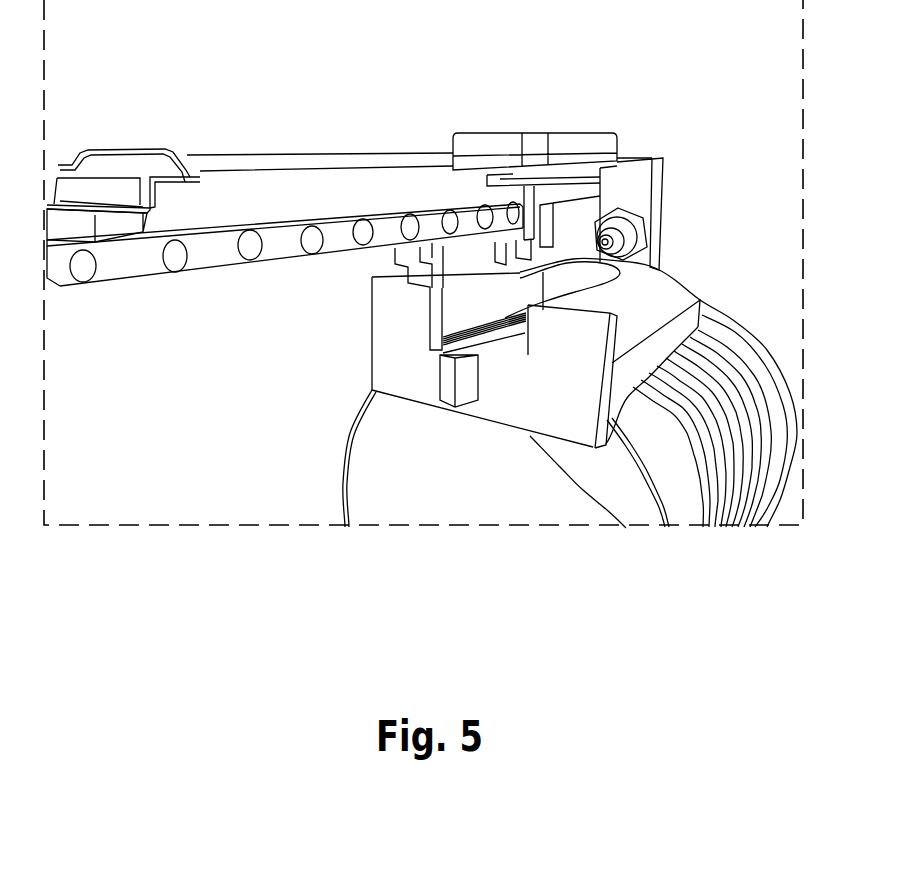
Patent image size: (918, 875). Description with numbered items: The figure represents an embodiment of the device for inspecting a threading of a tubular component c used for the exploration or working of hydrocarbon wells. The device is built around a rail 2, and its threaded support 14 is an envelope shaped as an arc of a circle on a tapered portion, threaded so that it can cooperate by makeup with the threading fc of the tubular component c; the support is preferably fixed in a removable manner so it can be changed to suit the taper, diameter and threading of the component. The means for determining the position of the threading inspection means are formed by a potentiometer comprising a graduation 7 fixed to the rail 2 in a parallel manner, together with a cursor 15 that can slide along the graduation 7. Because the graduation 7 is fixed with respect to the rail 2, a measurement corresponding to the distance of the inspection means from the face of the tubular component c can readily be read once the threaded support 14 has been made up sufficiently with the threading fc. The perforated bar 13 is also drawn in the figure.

The graduation 7 is at (320, 157).
The cursor 15 is at (580, 143).
The threaded support 14 is at (673, 300).
The perforated rail 13 is at (213, 250).
The rail 2 is at (512, 413).
The tubular component c is at (402, 480).
The threading of the tubular component fc is at (727, 478).